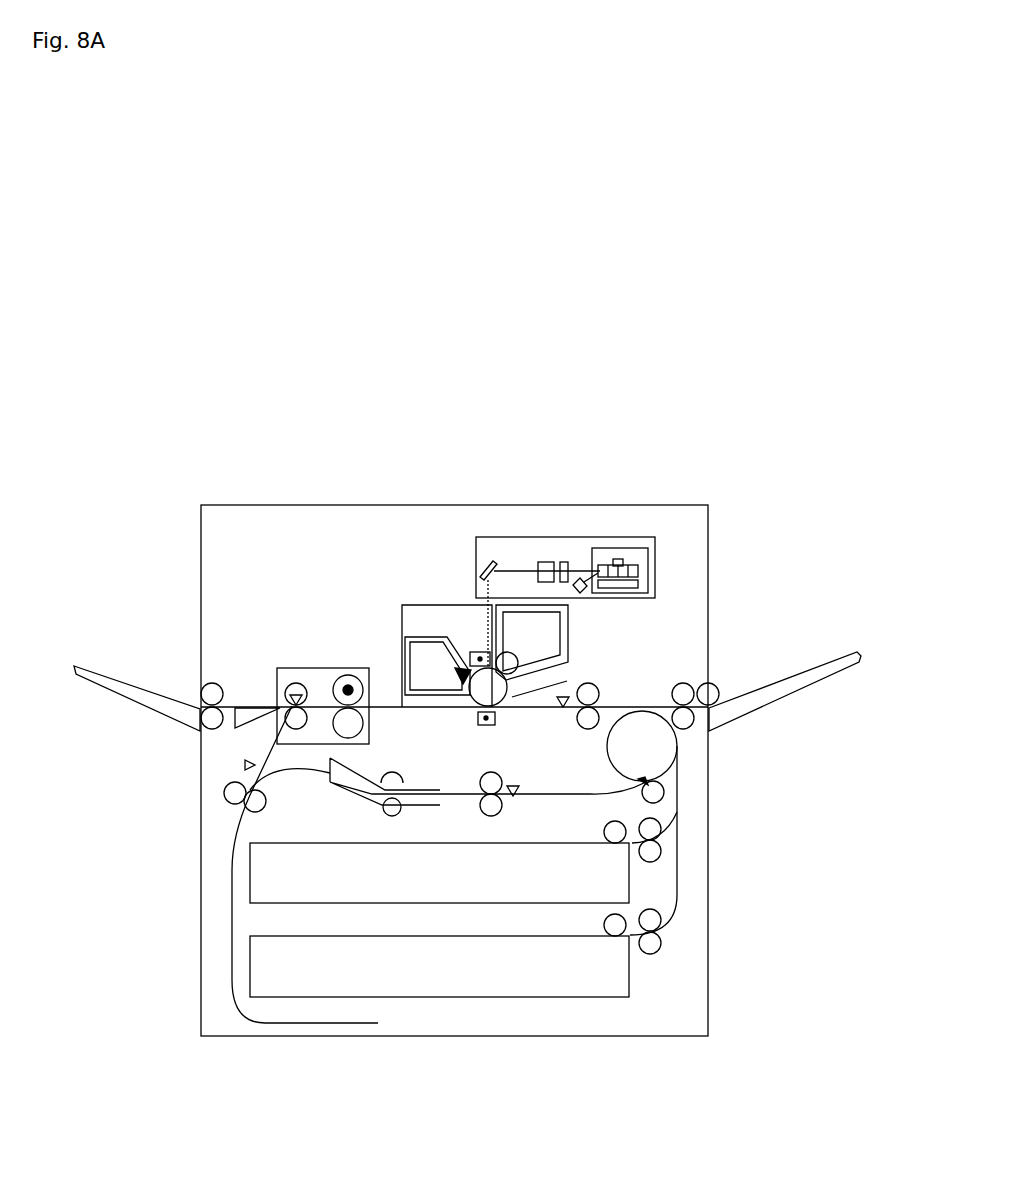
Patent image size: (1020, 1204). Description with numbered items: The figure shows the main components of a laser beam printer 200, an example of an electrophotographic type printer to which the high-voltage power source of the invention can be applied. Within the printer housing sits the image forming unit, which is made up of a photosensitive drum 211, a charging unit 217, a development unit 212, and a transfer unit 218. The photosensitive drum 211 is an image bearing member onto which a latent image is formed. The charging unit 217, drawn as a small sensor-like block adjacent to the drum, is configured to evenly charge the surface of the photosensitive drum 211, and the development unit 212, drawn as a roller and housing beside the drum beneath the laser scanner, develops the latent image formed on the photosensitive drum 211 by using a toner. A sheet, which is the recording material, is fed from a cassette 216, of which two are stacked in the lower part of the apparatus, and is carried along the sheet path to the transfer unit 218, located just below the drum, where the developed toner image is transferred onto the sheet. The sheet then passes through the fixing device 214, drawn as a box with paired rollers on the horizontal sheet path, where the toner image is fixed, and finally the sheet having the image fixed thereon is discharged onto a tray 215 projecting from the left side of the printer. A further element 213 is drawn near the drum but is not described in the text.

The laser beam printer 200 is at (615, 505).
The photosensitive drum 211 is at (430, 605).
The development unit 212 is at (515, 661).
The photosensitive drum 213 is at (503, 689).
The fixing device 214 is at (330, 667).
The tray 215 is at (120, 680).
The cassette 216 is at (622, 892).
The charging unit 217 is at (476, 652).
The transfer unit 218 is at (495, 720).